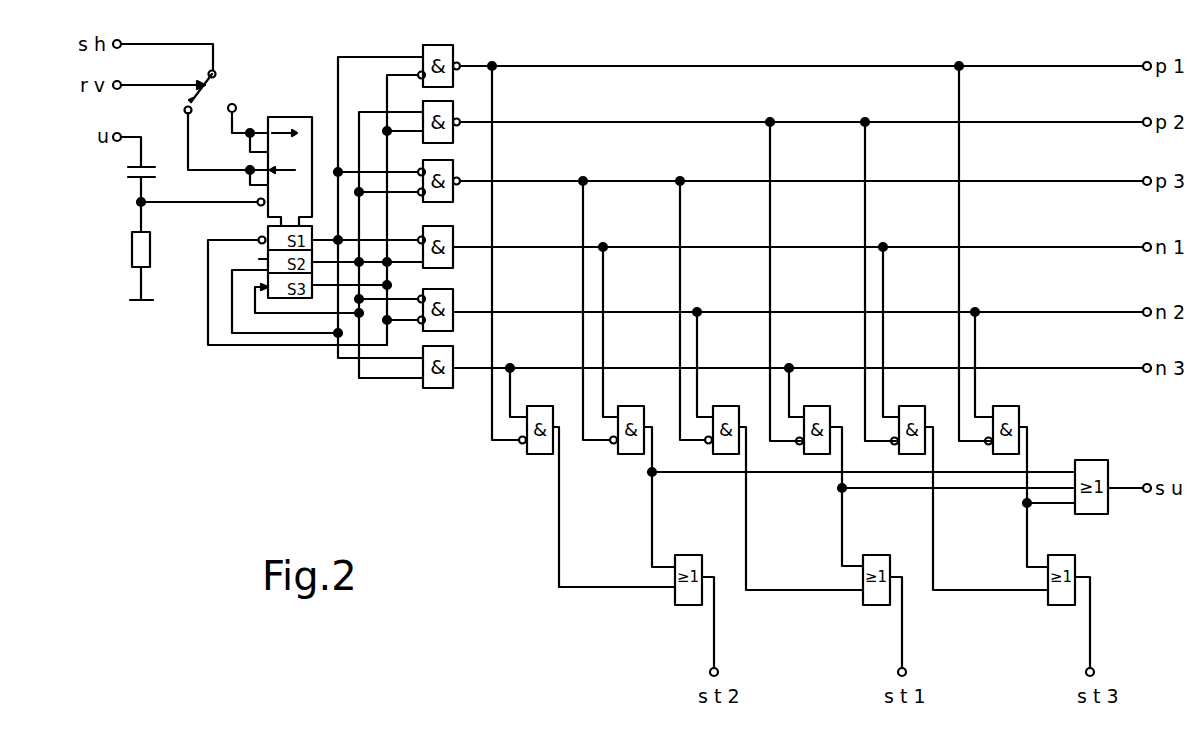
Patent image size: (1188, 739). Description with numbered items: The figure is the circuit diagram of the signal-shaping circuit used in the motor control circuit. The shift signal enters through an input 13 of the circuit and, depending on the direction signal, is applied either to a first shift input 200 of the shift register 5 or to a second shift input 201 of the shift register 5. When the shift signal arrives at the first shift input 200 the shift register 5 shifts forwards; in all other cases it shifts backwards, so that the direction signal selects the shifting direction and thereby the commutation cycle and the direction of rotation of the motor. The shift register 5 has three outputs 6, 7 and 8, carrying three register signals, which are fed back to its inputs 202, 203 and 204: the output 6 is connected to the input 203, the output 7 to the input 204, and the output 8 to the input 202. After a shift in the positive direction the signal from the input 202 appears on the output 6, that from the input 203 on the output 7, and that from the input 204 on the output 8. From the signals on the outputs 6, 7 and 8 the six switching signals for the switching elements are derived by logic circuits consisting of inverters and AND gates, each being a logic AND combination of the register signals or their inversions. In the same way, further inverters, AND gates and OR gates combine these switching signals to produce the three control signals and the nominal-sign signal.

The input of the circuit 13 is at (215, 72).
The first shift input 200 is at (244, 128).
The second shift input 201 is at (243, 165).
The shift register 5 is at (293, 117).
The input of the shift register 202 is at (259, 238).
The input of the shift register 203 is at (257, 268).
The input of the shift register 204 is at (295, 294).
The output of the shift register 6 is at (367, 207).
The output of the shift register 7 is at (367, 245).
The output of the shift register 8 is at (367, 210).